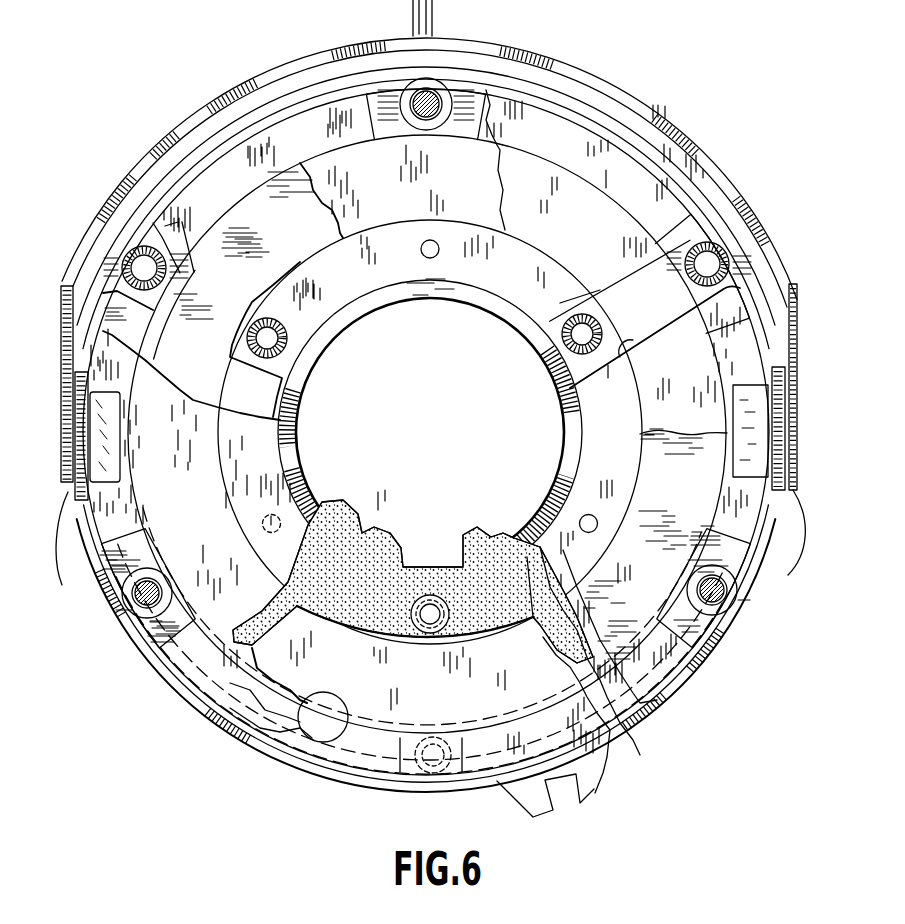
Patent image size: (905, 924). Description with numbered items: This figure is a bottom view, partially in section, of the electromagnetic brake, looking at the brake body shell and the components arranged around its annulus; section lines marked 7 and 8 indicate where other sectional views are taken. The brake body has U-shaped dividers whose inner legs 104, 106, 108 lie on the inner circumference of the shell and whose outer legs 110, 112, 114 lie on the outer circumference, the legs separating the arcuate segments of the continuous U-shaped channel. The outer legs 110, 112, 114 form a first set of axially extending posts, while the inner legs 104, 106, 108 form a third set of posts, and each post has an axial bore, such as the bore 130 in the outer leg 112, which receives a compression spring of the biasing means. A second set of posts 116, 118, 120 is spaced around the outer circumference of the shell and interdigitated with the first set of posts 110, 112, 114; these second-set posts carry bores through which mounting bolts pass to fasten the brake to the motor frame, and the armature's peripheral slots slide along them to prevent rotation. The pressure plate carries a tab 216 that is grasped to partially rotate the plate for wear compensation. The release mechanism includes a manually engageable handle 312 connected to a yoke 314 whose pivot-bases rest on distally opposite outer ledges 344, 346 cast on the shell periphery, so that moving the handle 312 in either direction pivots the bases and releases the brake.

The inner leg 104 is at (578, 394).
The inner leg 106 is at (443, 640).
The inner leg 108 is at (231, 326).
The outer leg 110 is at (687, 288).
The outer leg 112 is at (450, 722).
The outer leg 114 is at (180, 282).
The axially extending post 116 is at (695, 560).
The axially extending post 118 is at (148, 561).
The axially extending post 120 is at (441, 150).
The bore 130 is at (430, 762).
The tab 216 is at (598, 789).
The handle 312 is at (434, 13).
The yoke 314 is at (533, 47).
The outer ledge 344 is at (778, 445).
The outer ledge 346 is at (81, 450).
The section line 7- 7 is at (688, 47).
The section line 8- 8 is at (677, 390).